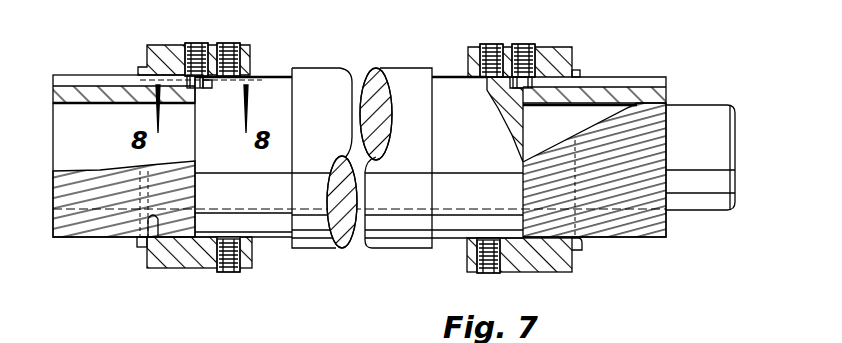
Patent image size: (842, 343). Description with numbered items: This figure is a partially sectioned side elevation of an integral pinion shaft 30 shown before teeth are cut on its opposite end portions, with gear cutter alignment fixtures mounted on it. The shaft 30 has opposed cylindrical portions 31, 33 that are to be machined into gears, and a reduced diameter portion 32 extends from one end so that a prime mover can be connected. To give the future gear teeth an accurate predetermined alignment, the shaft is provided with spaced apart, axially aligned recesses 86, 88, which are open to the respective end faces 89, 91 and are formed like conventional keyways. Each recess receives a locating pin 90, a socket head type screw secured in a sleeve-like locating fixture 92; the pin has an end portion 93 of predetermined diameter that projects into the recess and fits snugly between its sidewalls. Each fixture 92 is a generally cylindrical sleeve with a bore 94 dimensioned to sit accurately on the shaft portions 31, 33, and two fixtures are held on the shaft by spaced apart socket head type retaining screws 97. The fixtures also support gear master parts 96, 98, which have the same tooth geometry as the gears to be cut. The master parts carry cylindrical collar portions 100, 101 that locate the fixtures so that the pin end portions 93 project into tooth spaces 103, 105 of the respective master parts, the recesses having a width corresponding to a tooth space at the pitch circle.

The shaft 30 is at (405, 68).
The cylindrical portion 31 is at (283, 78).
The reduced diameter portion 32 is at (700, 208).
The cylindrical portion 33 is at (448, 80).
The recess 86 is at (196, 90).
The recess 88 is at (510, 115).
The end face 89 is at (189, 146).
The locating pin 90 is at (189, 43).
The end face 91 is at (535, 272).
The locating fixture 92 is at (572, 50).
The end portion 93 is at (191, 90).
The bore 94 is at (131, 237).
The gear master part 96 is at (87, 237).
The retaining screw 97 is at (230, 43).
The gear master part 98 is at (646, 238).
The cylindrical collar portion 100 is at (143, 247).
The cylindrical collar portion 101 is at (580, 248).
The tooth space 103 is at (97, 78).
The tooth space 105 is at (634, 77).